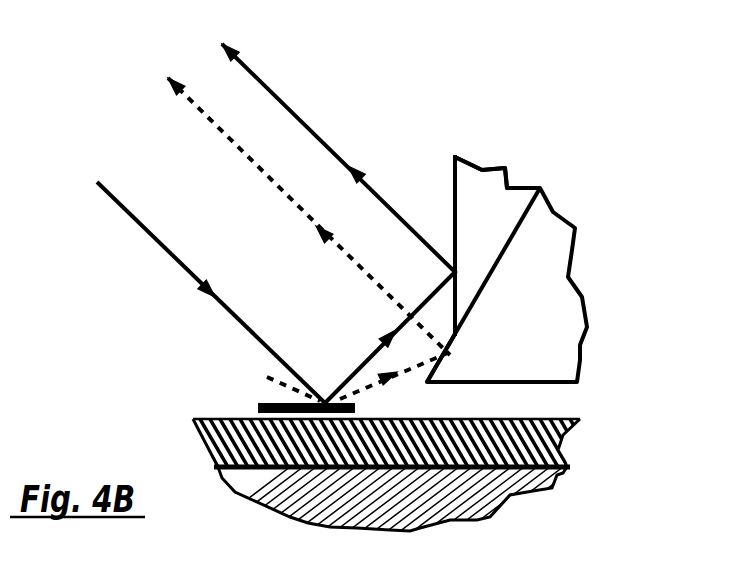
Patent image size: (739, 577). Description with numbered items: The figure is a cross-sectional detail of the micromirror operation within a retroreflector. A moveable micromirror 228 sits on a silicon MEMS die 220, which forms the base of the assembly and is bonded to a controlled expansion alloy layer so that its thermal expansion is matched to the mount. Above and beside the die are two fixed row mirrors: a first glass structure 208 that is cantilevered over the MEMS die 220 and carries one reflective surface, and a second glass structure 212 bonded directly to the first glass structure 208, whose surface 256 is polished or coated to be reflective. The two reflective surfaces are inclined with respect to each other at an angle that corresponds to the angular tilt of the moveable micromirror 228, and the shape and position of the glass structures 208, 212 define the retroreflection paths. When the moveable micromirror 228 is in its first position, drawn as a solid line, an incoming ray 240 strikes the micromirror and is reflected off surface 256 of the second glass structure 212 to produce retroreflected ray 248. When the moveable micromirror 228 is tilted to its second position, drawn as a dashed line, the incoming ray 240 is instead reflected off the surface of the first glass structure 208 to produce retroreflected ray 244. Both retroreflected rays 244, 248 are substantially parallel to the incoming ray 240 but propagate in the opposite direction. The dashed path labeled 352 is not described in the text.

The glass structure 208 is at (553, 298).
The glass structure 212 is at (480, 180).
The silicon MEMS die 220 is at (565, 447).
The moveable micromirror 228 is at (263, 402).
The incoming ray 240 is at (160, 248).
The retroreflected ray 244 is at (250, 159).
The retroreflected ray 248 is at (275, 90).
The reflective surface 256 is at (452, 208).
The scattered light path 352 is at (450, 352).